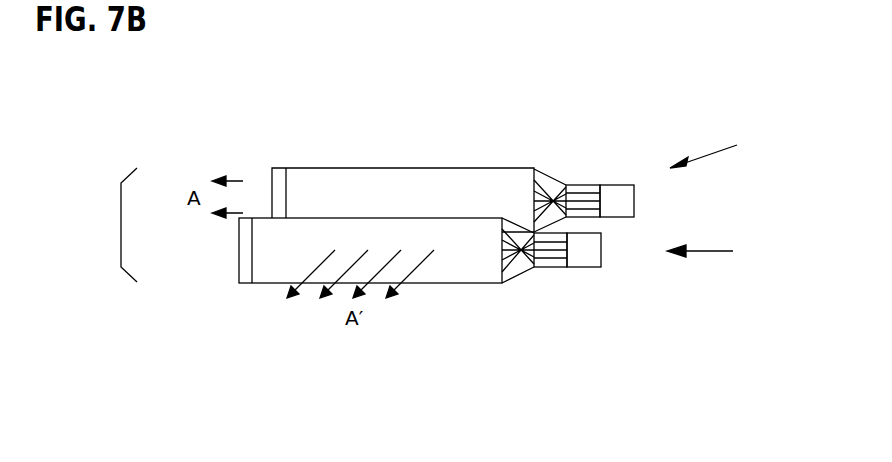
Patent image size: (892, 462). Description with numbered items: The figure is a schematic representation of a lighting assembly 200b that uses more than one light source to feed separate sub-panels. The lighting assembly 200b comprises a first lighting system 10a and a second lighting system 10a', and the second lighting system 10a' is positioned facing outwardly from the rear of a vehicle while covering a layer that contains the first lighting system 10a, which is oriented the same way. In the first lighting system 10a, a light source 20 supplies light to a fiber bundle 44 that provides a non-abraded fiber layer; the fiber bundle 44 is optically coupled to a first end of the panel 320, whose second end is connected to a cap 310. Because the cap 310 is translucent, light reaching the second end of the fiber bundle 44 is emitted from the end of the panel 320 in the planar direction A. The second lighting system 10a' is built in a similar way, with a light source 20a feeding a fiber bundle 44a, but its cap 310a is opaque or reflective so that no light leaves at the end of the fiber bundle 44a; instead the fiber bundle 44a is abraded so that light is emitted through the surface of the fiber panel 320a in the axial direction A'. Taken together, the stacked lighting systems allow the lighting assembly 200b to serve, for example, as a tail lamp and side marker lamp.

The lighting assembly 200b is at (120, 227).
The cap 310 is at (272, 168).
The panel 320 is at (387, 168).
The cap 310a is at (238, 285).
The fiber panel 320a is at (430, 285).
The fiber bundle 44 is at (552, 170).
The fiber bundle 44a is at (517, 282).
The light source 20 is at (621, 185).
The light source 20a is at (582, 268).
The first lighting system 10a is at (730, 149).
The second lighting system 10a' is at (728, 256).